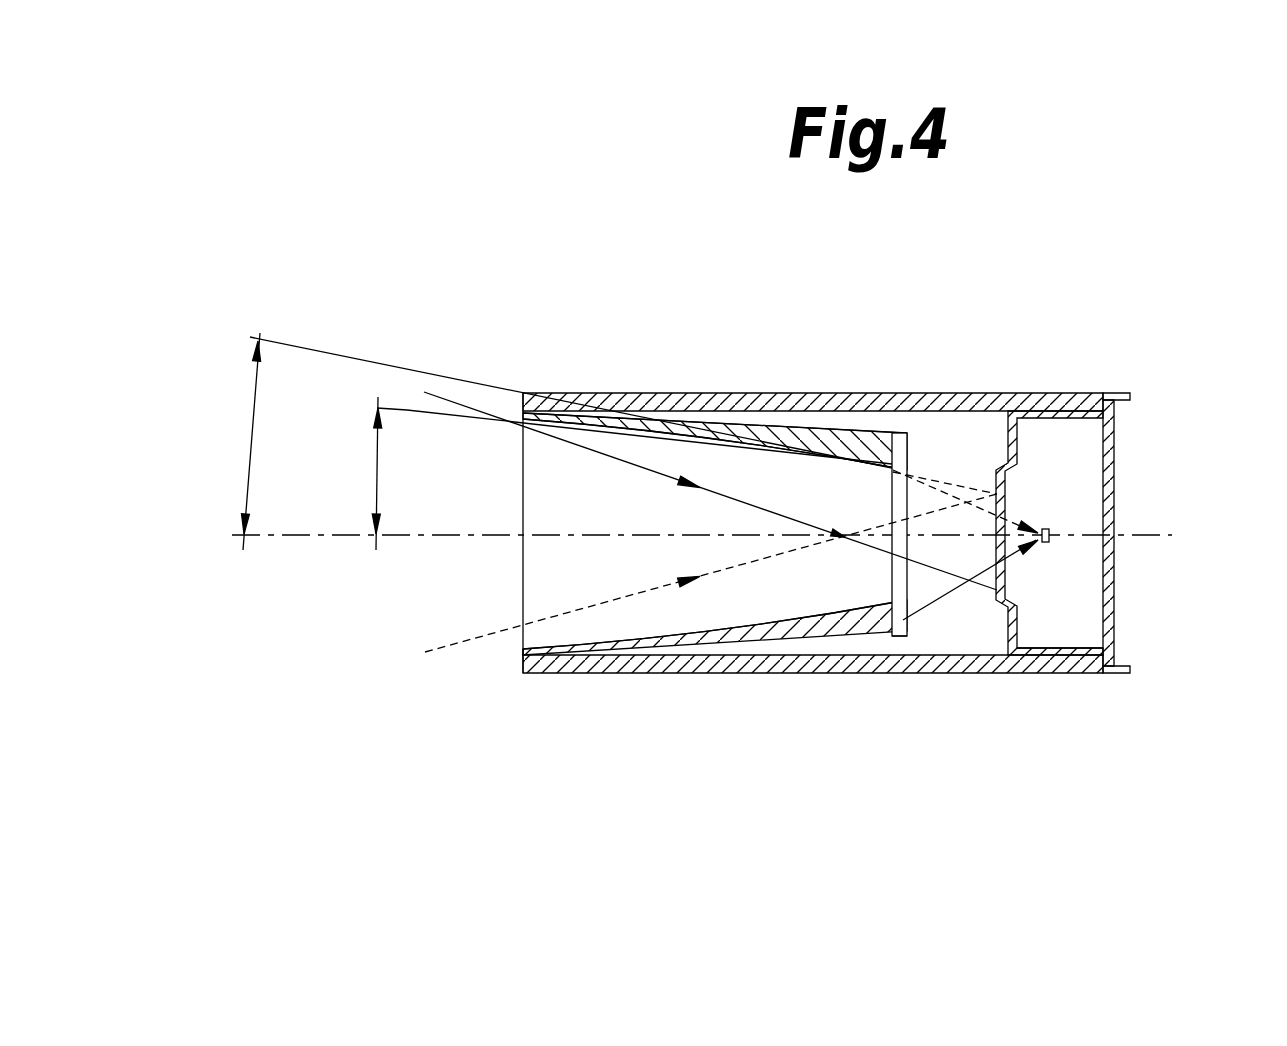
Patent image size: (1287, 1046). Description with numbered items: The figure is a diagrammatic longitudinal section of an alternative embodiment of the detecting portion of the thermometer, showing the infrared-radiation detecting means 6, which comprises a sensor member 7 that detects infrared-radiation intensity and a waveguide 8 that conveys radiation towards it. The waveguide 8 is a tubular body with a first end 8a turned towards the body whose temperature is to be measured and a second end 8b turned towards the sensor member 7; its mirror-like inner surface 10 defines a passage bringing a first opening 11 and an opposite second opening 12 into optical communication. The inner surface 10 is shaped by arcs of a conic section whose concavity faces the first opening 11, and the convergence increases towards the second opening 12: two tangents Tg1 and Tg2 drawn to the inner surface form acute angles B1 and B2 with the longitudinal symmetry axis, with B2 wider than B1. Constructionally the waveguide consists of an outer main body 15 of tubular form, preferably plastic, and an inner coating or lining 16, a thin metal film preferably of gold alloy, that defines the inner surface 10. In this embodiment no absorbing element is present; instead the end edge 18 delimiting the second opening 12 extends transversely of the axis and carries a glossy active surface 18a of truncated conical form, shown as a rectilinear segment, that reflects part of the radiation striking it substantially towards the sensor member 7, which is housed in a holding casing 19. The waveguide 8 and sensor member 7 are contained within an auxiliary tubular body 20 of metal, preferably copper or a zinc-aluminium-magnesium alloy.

The infrared-radiation detecting means 6 is at (565, 712).
The sensor member 7 is at (1046, 532).
The waveguide 8 is at (783, 412).
The first end 8a is at (535, 651).
The second end 8b is at (847, 618).
The inner surface 10 is at (728, 470).
The first opening 11 is at (540, 492).
The second opening 12 is at (897, 492).
The outer main body 15 is at (864, 446).
The inner coating or lining 16 is at (820, 438).
The end edge 18 is at (905, 636).
The glossy active surface 18a is at (928, 614).
The holding casing 19 is at (1018, 652).
The auxiliary tubular body 20 is at (646, 393).
The acute angle β1 B1 is at (375, 478).
The acute angle β2 B2 is at (243, 430).
The tangent tg1 Tg1 is at (405, 412).
The tangent tg2 Tg2 is at (293, 347).